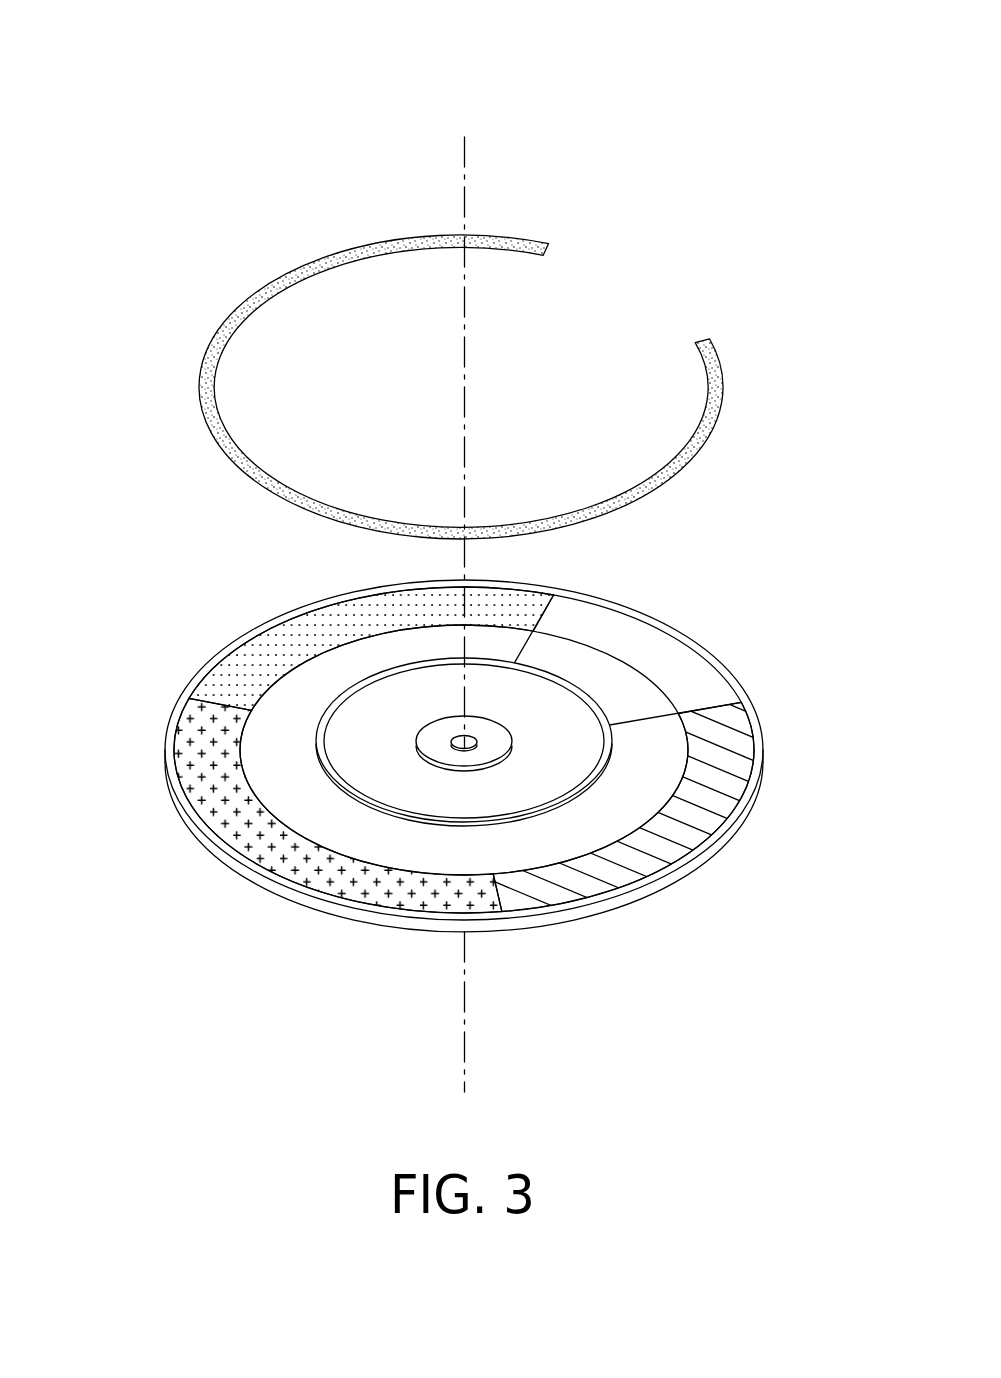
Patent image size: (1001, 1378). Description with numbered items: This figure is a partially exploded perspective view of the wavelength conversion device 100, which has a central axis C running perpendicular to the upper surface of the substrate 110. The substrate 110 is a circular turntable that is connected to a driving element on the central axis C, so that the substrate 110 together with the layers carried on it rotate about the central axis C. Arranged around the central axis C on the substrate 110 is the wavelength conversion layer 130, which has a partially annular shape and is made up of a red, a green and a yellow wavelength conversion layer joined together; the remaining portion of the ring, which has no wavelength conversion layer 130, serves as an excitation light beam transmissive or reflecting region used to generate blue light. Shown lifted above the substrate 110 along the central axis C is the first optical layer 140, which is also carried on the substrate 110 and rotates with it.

The wavelength conversion device 100 is at (825, 1093).
The substrate 110 is at (658, 763).
The wavelength conversion layer 130 is at (136, 111).
The first optical layer 140 is at (357, 246).